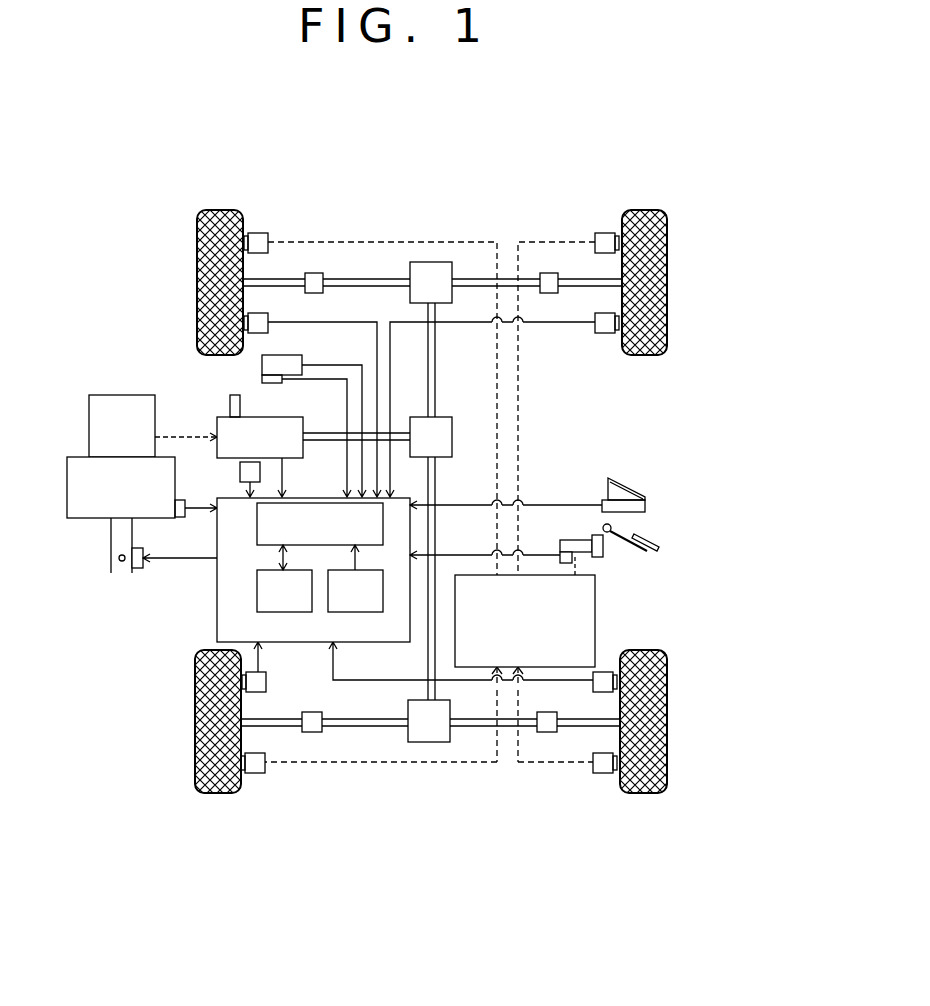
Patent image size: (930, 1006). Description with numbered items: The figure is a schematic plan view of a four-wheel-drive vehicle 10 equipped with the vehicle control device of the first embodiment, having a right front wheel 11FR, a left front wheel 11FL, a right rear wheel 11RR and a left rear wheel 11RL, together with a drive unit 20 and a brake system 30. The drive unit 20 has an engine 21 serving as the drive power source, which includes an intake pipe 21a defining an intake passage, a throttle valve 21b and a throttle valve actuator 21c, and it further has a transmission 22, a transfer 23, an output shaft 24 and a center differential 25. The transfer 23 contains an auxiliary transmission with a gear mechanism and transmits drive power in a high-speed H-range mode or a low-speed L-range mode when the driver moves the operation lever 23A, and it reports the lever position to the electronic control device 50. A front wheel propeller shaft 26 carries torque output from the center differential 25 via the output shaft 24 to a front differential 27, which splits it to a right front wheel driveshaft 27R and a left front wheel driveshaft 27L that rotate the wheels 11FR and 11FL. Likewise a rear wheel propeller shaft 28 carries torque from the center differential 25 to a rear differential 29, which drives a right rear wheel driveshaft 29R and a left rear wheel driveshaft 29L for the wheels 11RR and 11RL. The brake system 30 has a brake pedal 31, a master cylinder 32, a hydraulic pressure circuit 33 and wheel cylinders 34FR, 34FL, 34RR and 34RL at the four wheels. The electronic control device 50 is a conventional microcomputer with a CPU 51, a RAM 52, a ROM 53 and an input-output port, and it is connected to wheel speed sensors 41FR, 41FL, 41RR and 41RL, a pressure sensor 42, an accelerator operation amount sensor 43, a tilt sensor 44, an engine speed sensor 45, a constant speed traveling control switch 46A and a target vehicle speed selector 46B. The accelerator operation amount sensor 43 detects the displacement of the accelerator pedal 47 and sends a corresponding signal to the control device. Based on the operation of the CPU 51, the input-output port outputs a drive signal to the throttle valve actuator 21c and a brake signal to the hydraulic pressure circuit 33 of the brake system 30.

The vehicle 10 is at (167, 196).
The left front wheel 11FL is at (197, 263).
The right front wheel 11FR is at (645, 210).
The left rear wheel 11RL is at (195, 723).
The right rear wheel 11RR is at (645, 794).
The drive unit 20 is at (121, 414).
The engine 21 is at (108, 512).
The intake pipe 21a is at (111, 540).
The throttle valve 21b is at (118, 562).
The throttle valve actuator 21c is at (138, 569).
The transmission 22 is at (108, 450).
The transfer 23 is at (217, 422).
The operation lever 23A is at (230, 405).
The output shaft 24 is at (398, 433).
The center differential 25 is at (452, 437).
The front wheel propeller shaft 26 is at (437, 364).
The front differential 27 is at (410, 298).
The left front wheel driveshaft 27L is at (336, 278).
The right front wheel driveshaft 27R is at (588, 278).
The rear wheel propeller shaft 28 is at (437, 483).
The rear differential 29 is at (408, 735).
The left rear wheel driveshaft 29L is at (336, 716).
The right rear wheel driveshaft 29R is at (587, 716).
The brake system 30 is at (557, 561).
The brake pedal 31 is at (659, 546).
The master cylinder 32 is at (578, 539).
The hydraulic pressure circuit 33 is at (511, 663).
The wheel cylinder 34FL is at (264, 233).
The wheel cylinder 34FR is at (604, 233).
The wheel cylinder 34RL is at (265, 758).
The wheel cylinder 34RR is at (593, 755).
The wheel speed sensor 41FL is at (278, 320).
The wheel speed sensor 41FR is at (600, 318).
The wheel speed sensor 41RL is at (266, 682).
The wheel speed sensor 41RR is at (604, 672).
The pressure sensor 42 is at (560, 554).
The accelerator operation amount sensor 43 is at (557, 485).
The tilt sensor 44 is at (240, 472).
The engine speed sensor 45 is at (182, 520).
The constant speed traveling control switch 46A is at (290, 355).
The target vehicle speed selector 46B is at (275, 384).
The accelerator pedal 47 is at (626, 486).
The electronic control device 50 is at (285, 570).
The CPU 51 is at (257, 535).
The RAM 52 is at (280, 613).
The ROM 53 is at (352, 613).